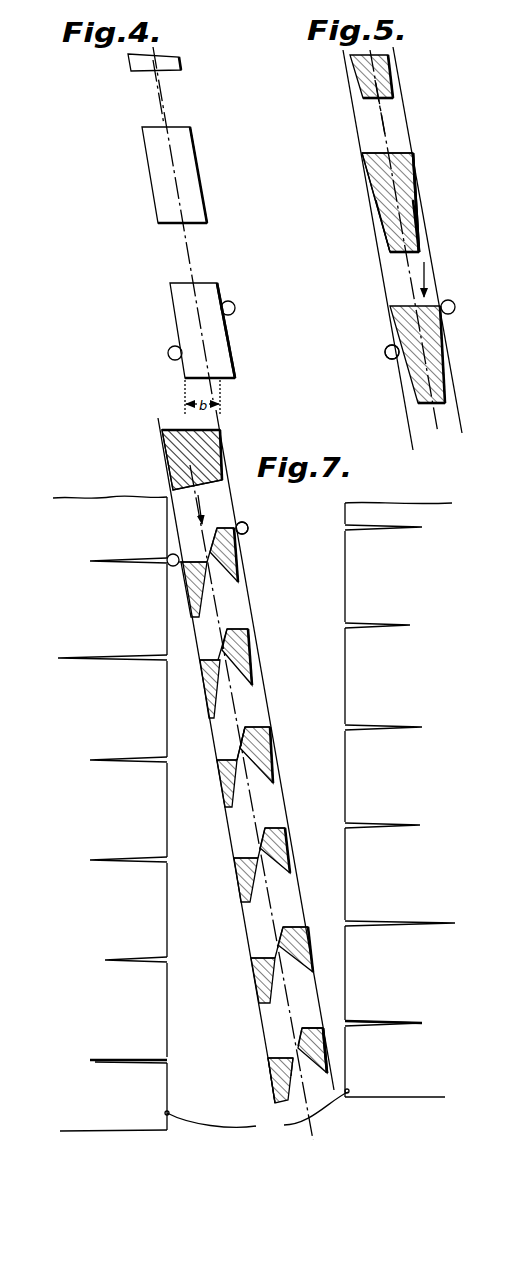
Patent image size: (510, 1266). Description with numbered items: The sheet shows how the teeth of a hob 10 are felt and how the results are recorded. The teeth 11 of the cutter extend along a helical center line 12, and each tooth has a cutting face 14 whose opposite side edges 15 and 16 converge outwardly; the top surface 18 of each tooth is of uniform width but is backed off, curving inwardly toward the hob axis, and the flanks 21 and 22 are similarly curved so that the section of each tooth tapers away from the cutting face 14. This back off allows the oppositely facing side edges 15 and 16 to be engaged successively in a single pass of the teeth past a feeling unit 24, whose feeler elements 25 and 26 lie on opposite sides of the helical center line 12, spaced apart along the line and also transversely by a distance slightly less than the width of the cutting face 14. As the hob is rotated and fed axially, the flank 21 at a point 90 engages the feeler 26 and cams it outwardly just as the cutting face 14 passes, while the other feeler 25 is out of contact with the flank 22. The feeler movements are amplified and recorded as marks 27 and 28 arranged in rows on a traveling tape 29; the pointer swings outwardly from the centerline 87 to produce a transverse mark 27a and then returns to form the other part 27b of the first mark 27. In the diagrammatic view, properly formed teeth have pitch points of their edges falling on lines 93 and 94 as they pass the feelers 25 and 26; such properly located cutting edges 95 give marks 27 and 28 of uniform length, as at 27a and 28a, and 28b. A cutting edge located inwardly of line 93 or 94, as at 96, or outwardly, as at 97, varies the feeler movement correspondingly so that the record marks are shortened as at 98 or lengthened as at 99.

In FIG. 5, the hob 10 is at (420, 180).
In FIG. 4, the teeth 11 is at (168, 290).
In FIG. 5, the teeth 11 is at (383, 78).
In FIG. 7, the teeth 11 is at (185, 458).
In FIG. 4, the helical center line 12 is at (162, 104).
In FIG. 5, the helical center line 12 is at (382, 119).
In FIG. 7, the helical center line 12 is at (255, 905).
In FIG. 4, the cutting face 14 is at (180, 127).
In FIG. 5, the cutting face 14 is at (395, 153).
In FIG. 7, the cutting face 14 is at (195, 430).
In FIG. 5, the side edge 15 is at (362, 153).
In FIG. 7, the side edge 15 is at (268, 1058).
In FIG. 5, the side edge 16 is at (412, 153).
In FIG. 7, the side edge 16 is at (323, 1028).
In FIG. 4, the top surface 18 is at (203, 292).
In FIG. 5, the tooth flank 21 is at (419, 226).
In FIG. 7, the tooth flank 21 is at (328, 1062).
In FIG. 5, the tooth flank 22 is at (378, 230).
In FIG. 7, the tooth flank 22 is at (275, 1096).
In FIG. 4, the feeling unit 24 is at (239, 324).
In FIG. 5, the feeling unit 24 is at (384, 351).
In FIG. 7, the feeling unit 24 is at (250, 527).
In FIG. 4, the feeler element 25 is at (168, 357).
In FIG. 5, the feeler element 25 is at (387, 360).
In FIG. 7, the feeler element 25 is at (173, 567).
In FIG. 4, the feeler element 26 is at (235, 306).
In FIG. 5, the feeler element 26 is at (455, 300).
In FIG. 7, the feeler element 26 is at (249, 533).
In FIG. 7, the mark 27 is at (408, 1022).
In FIG. 7, the transverse mark 27a is at (407, 727).
In FIG. 7, the other part of mark 27b is at (360, 1022).
In FIG. 7, the mark 28 is at (100, 1067).
In FIG. 7, the mark of uniform length 28a is at (105, 762).
In FIG. 7, the left support ledge top 28b is at (135, 1058).
In FIG. 7, the traveling tape 29 is at (128, 1118).
In FIG. 7, the centerline 87 is at (257, 1112).
In FIG. 5, the point 90 is at (442, 317).
In FIG. 7, the line 93 is at (215, 748).
In FIG. 7, the line 94 is at (265, 709).
In FIG. 7, the properly located cutting edge 95 is at (233, 528).
In FIG. 7, the improperly located cutting edge 96 is at (249, 629).
In FIG. 7, the improperly located cutting edge 97 is at (197, 660).
In FIG. 7, the shortened record mark 98 is at (115, 960).
In FIG. 7, the lengthened record mark 99 is at (78, 658).